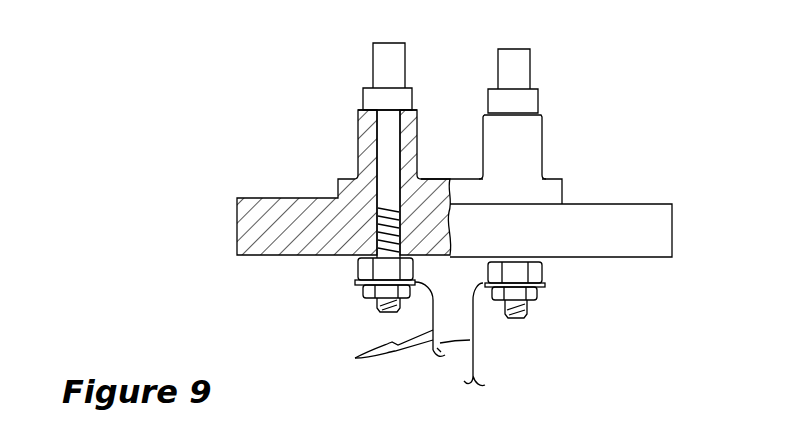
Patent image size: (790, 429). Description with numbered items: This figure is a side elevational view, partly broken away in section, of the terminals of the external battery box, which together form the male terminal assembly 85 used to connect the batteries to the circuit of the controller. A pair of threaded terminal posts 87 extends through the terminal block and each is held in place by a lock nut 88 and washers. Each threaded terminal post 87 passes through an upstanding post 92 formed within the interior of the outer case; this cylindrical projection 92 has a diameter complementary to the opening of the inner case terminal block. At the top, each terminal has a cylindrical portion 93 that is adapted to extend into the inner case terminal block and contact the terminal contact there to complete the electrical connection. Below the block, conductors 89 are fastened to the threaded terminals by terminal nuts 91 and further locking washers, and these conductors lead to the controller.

The male terminal assembly 85 is at (624, 201).
The threaded terminal post 87 is at (347, 187).
The lock nut 88 is at (358, 268).
The conductor 89 is at (397, 334).
The terminal nut 91 is at (360, 290).
The upstanding post 92 is at (358, 138).
The cylindrical portion 93 is at (380, 62).